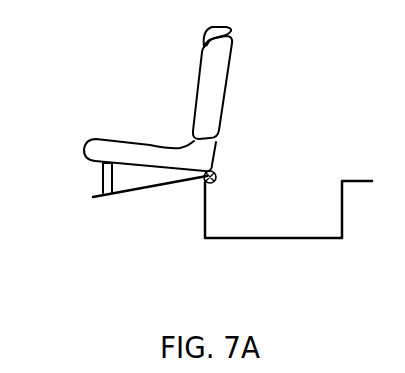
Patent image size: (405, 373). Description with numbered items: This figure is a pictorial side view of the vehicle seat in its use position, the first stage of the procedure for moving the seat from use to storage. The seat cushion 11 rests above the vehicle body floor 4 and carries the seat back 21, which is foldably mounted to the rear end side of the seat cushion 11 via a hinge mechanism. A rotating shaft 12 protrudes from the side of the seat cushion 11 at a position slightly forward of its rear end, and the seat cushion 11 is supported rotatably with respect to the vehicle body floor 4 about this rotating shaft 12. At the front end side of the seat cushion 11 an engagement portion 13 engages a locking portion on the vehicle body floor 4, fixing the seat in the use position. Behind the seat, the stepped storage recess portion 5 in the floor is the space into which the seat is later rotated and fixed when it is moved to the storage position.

The seat back 21 is at (206, 86).
The seat cushion 11 is at (98, 142).
The engagement portion 13 is at (103, 178).
The vehicle body floor 4 is at (164, 186).
The rotating shaft 12 is at (216, 172).
The storage recess portion 5 is at (257, 238).